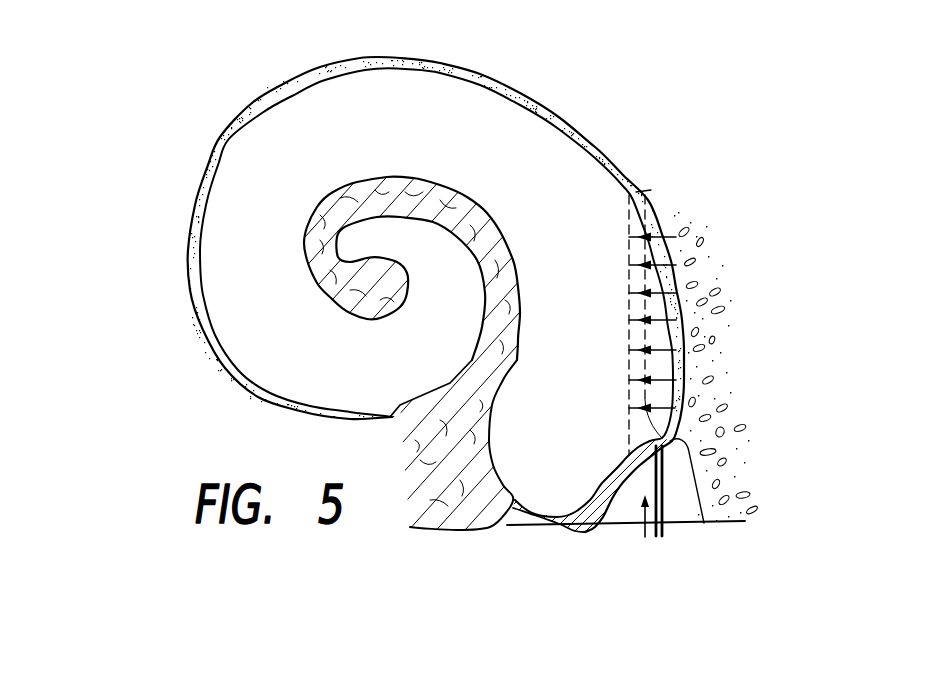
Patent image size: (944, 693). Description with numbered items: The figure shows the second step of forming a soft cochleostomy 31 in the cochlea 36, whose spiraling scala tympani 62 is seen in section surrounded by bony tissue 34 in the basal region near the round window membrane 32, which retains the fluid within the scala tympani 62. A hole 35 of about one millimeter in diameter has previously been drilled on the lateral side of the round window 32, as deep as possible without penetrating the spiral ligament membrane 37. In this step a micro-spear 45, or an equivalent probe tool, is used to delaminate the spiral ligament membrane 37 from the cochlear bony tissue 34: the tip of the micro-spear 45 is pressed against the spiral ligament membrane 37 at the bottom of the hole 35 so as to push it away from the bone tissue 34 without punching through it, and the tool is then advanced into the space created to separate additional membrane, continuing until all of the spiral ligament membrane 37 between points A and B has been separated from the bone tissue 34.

The cochlea 36 is at (157, 108).
The spiral ligament membrane 37 is at (560, 124).
The scala tympani 62 is at (600, 371).
The bony tissue 34 is at (736, 276).
The micro-spear 45 is at (664, 478).
The soft cochleostomy 31 is at (648, 535).
The hole 35 is at (613, 514).
The round window membrane 32 is at (556, 518).